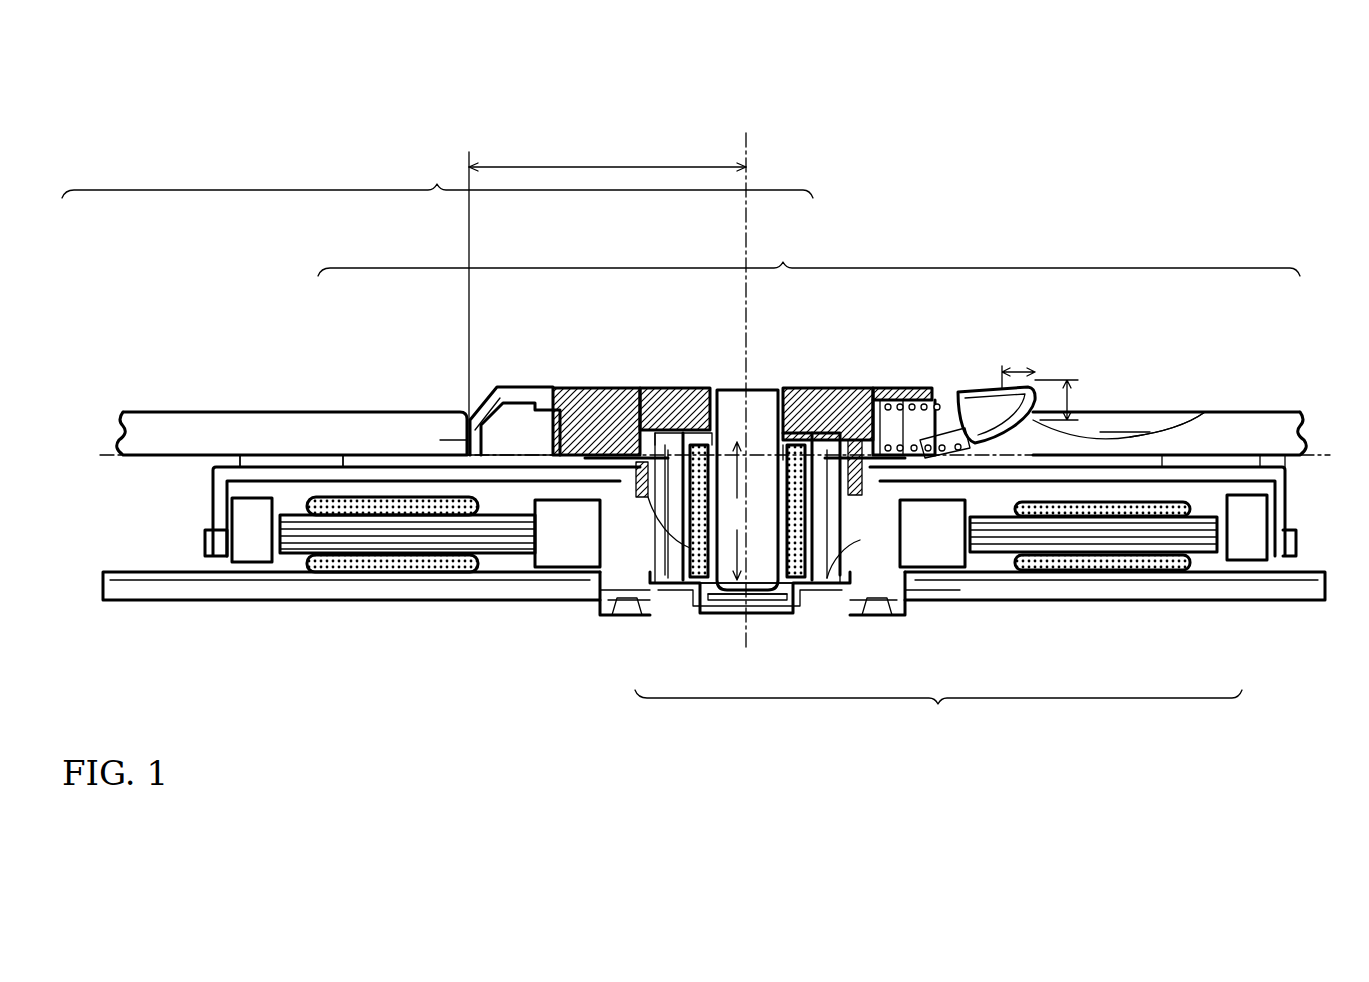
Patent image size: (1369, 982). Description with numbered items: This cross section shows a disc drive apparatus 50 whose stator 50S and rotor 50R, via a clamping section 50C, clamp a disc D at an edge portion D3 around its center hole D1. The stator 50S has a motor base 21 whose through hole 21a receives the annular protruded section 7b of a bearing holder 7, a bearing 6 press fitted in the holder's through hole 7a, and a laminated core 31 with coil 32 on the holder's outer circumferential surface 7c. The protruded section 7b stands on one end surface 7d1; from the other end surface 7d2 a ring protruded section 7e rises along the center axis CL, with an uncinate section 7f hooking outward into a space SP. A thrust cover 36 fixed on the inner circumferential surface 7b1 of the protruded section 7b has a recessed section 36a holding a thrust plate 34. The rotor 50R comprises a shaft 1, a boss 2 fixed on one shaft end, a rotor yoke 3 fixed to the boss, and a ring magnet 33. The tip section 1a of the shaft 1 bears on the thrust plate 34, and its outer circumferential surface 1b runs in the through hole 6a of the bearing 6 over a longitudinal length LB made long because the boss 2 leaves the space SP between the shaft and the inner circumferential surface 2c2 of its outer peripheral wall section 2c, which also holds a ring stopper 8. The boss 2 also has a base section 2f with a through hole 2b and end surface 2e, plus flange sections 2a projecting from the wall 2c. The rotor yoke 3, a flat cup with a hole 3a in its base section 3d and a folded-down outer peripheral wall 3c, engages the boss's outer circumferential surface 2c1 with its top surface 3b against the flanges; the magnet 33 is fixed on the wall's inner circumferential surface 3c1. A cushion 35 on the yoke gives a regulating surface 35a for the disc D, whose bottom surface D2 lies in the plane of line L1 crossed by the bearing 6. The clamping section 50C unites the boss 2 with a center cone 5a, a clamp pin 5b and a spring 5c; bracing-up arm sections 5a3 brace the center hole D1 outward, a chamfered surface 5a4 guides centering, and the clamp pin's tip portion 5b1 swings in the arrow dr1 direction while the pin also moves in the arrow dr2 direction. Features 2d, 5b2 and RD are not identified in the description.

The shaft 1 is at (735, 388).
The tip section 1a is at (763, 388).
The outer circumferential surface 1b is at (768, 388).
The boss 2 is at (693, 422).
The flange sections 2a is at (595, 400).
The through hole 2b is at (706, 410).
The outer peripheral wall section 2c is at (625, 432).
The outer circumferential surface 2c1 is at (562, 405).
The inner circumferential surface 2c2 is at (875, 392).
The hub flange 2d is at (668, 442).
The end surface 2e is at (690, 436).
The base section 2f is at (648, 440).
The rotor yoke 3 is at (369, 378).
The hole 3a is at (362, 468).
The top surface 3b is at (250, 512).
The outer peripheral wall 3c is at (232, 500).
The inner circumferential surface 3c1 is at (213, 535).
The base section 3d is at (322, 472).
The center cone 5a is at (921, 388).
The bracing-up arm sections 5a3 is at (486, 394).
The chamfered surface 5a4 is at (470, 422).
The clamp pin 5b is at (988, 388).
The tip portion 5b1 is at (1037, 394).
The clamp arm contact portion 5b2 is at (1192, 432).
The spring 5c is at (960, 388).
The bearing 6 is at (812, 592).
The through hole 6a is at (690, 582).
The bearing holder 7 is at (732, 619).
The through hole 7a is at (836, 576).
The protruded section 7b is at (897, 606).
The inner circumferential surface 7b1 is at (630, 602).
The outer circumferential surface 7c is at (952, 596).
The end surface 7d1 is at (605, 591).
The end surface 7d2 is at (575, 589).
The ring protruded section 7e is at (866, 590).
The uncinate section 7f is at (545, 590).
The ring stopper 8 is at (850, 388).
The motor base 21 is at (1200, 590).
The through hole 21a is at (918, 600).
The laminated core 31 is at (1000, 585).
The coil 32 is at (1158, 572).
The magnet 33 is at (235, 566).
The thrust plate 34 is at (772, 602).
The cushion 35 is at (317, 452).
The regulating surface 35a is at (276, 456).
The thrust cover 36 is at (668, 592).
The recessed section 36a is at (733, 600).
The disc drive apparatus 50 is at (437, 143).
The rotor 50R is at (438, 303).
The clamping section 50C is at (809, 233).
The stator 50S is at (938, 714).
The center axis CL is at (745, 376).
The disc D is at (1270, 430).
The center hole D1 is at (465, 438).
The bottom surface D2 is at (1291, 457).
The edge portion D3 is at (1125, 432).
The line L1- L1 is at (710, 454).
The longitudinal length LB is at (737, 511).
The radial distance RD is at (607, 151).
The space SP is at (828, 388).
The arrow dr1 direction dr1 is at (1078, 399).
The arrow dr2 direction dr2 is at (1016, 360).